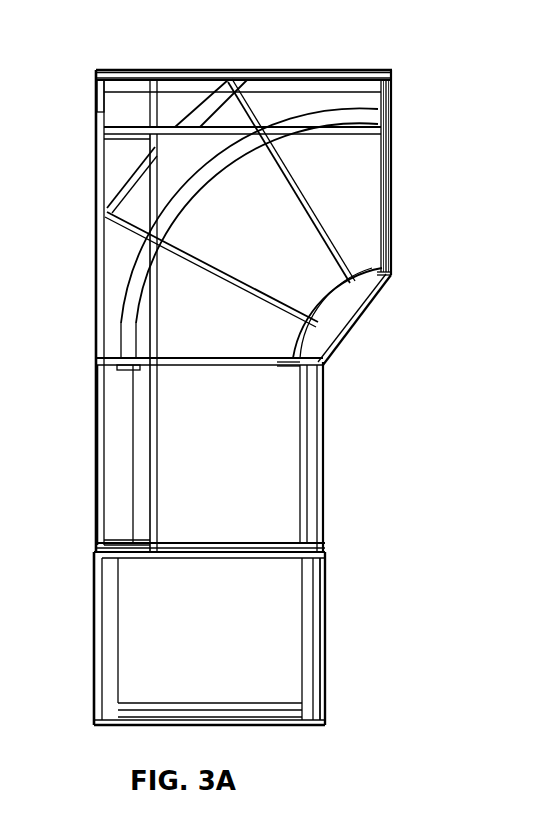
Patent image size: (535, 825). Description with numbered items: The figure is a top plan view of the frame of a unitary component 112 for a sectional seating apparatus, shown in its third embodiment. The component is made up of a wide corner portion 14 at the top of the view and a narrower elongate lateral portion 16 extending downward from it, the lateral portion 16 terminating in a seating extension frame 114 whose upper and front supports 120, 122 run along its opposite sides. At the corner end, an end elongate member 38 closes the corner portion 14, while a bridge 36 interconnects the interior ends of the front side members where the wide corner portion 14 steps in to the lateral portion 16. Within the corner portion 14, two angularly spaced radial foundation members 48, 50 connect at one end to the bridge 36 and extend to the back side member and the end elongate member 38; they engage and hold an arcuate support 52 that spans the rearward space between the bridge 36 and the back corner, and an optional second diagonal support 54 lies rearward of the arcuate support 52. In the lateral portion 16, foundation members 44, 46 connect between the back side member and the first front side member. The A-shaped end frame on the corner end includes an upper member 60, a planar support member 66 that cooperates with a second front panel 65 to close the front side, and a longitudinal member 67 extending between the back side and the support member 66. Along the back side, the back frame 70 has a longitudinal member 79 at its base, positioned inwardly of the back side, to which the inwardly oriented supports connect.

The corner portion 14 is at (470, 72).
The elongate lateral portion 16 is at (409, 362).
The bridge 36 is at (343, 320).
The end elongate member 38 is at (160, 705).
The foundation member 44 is at (215, 545).
The foundation member 46 is at (245, 365).
The radial foundation member 48 is at (253, 293).
The radial foundation member 50 is at (300, 213).
The arcuate support 52 is at (208, 173).
The second diagonal support 54 is at (163, 152).
The upper member 60 is at (240, 70).
The second front panel 65 is at (392, 241).
The support member 66 is at (388, 100).
The longitudinal member 67 is at (380, 183).
The back frame 70 is at (97, 455).
The longitudinal member 79 is at (133, 492).
The unitary component 112 is at (330, 725).
The seating extension frame 114 is at (409, 555).
The upper support 120 is at (112, 624).
The front support 122 is at (310, 630).